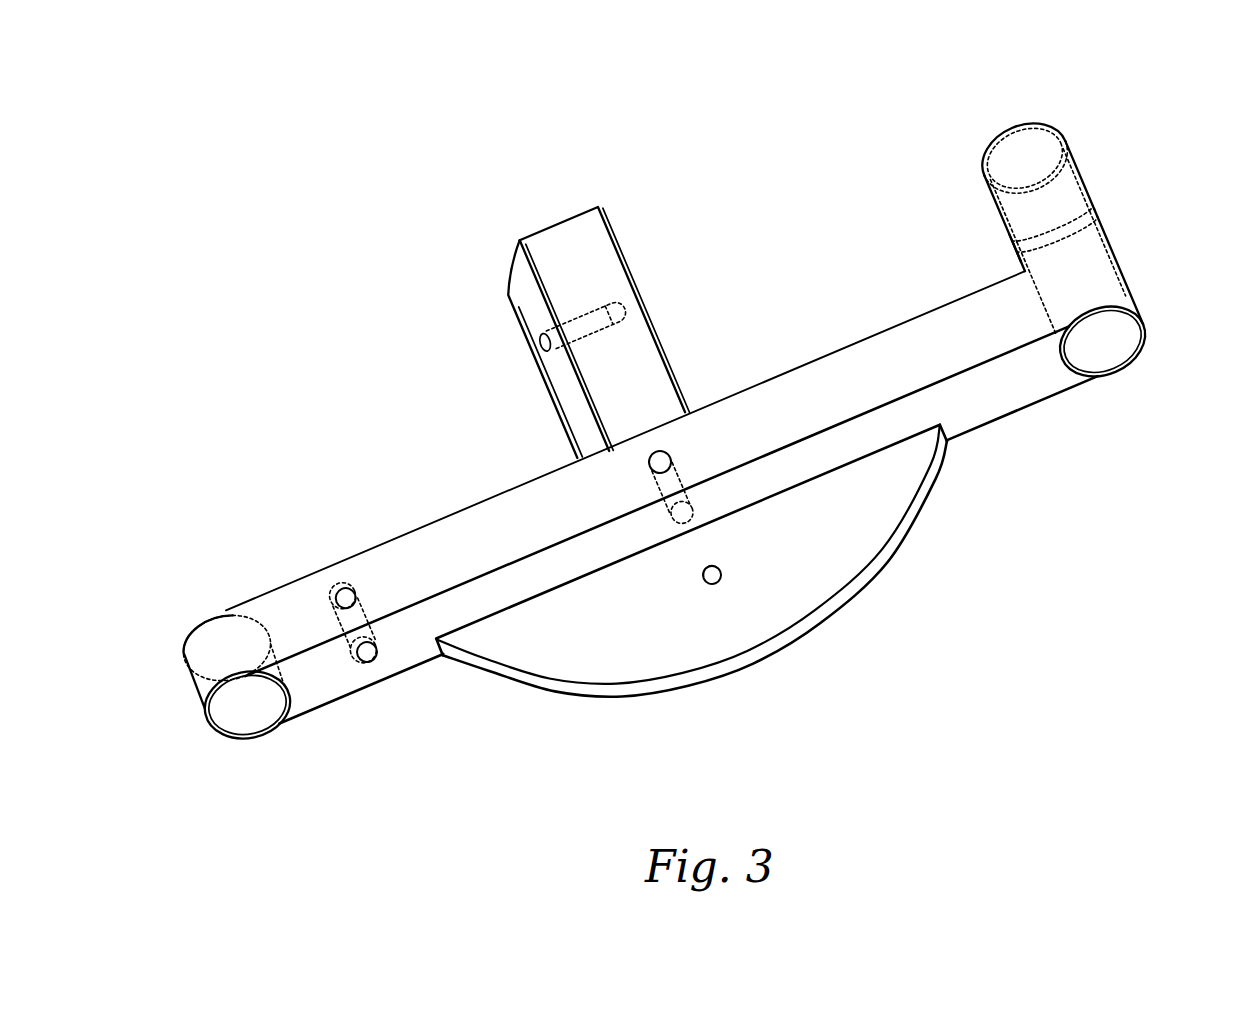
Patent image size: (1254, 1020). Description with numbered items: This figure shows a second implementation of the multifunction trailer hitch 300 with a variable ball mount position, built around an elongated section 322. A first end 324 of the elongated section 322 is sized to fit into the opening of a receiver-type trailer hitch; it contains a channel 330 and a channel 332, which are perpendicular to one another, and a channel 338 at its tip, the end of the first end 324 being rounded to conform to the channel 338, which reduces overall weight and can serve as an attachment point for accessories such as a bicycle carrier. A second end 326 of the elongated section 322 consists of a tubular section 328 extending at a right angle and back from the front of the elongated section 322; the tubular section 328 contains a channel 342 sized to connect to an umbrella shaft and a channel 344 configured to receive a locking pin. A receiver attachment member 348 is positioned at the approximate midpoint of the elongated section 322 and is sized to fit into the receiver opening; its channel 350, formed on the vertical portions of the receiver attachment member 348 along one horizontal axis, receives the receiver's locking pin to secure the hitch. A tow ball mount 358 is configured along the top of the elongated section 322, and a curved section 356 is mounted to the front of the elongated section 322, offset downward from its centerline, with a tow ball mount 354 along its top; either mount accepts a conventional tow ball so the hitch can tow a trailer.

The bracket assembly 300 is at (1152, 72).
The elongated section 322 is at (848, 394).
The first end 324 is at (206, 694).
The second end 326 is at (1056, 264).
The tubular section 328 is at (1052, 124).
The channel 330 is at (376, 643).
The channel 332 is at (354, 590).
The channel 338 is at (242, 710).
The channel 342 is at (1105, 347).
The channel 344 is at (1013, 245).
The receiver attachment member 348 is at (611, 319).
The channel 350 is at (542, 349).
The tow ball mount 354 is at (708, 567).
The curved section 356 is at (717, 600).
The tow ball mount 358 is at (653, 467).